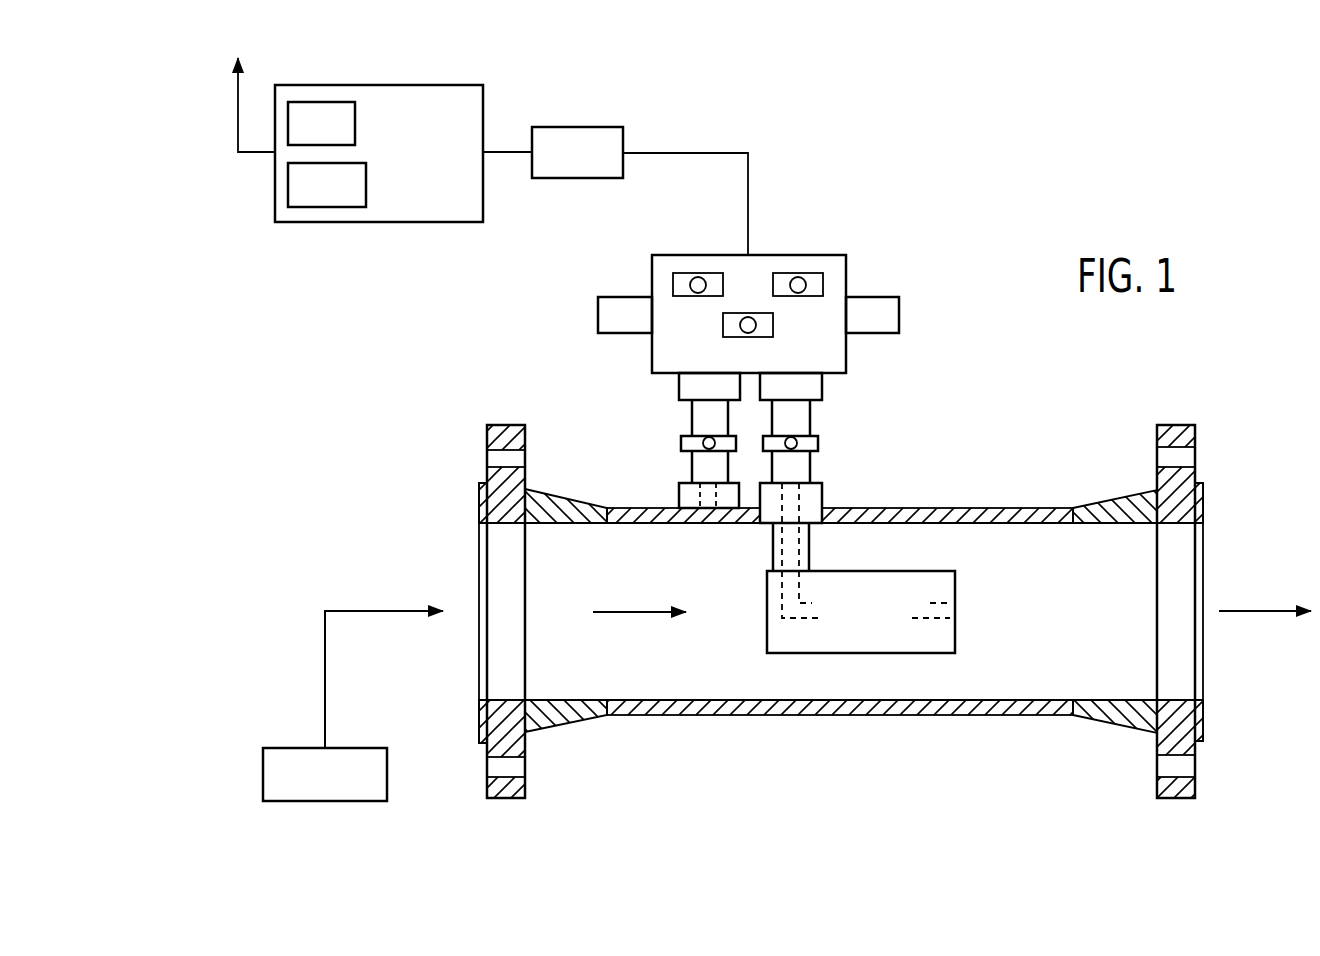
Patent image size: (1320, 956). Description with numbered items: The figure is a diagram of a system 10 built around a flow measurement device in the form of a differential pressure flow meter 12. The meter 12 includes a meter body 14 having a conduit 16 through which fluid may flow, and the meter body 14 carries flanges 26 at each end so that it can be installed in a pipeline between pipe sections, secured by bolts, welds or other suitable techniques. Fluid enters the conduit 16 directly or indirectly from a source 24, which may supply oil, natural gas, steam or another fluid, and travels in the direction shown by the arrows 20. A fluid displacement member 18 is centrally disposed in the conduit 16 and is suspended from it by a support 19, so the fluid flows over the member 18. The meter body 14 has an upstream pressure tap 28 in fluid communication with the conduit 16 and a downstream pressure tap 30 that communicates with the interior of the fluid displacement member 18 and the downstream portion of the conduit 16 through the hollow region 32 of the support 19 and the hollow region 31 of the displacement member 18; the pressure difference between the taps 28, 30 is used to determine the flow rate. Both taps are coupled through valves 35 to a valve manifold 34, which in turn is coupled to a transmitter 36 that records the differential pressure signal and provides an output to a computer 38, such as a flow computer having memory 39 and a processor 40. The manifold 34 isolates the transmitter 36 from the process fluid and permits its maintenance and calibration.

The system 10 is at (979, 252).
The differential pressure flow meter 12 is at (869, 583).
The meter body 14 is at (870, 715).
The conduit 16 is at (1124, 642).
The fluid displacement member 18 is at (913, 653).
The support 19 is at (809, 543).
The arrows 20 is at (393, 611).
The source 24 is at (262, 774).
The flanges 26 is at (510, 425).
The upstream pressure tap 28 is at (679, 497).
The downstream pressure tap 30 is at (822, 496).
The hollow region of the fluid displacement member 31 is at (773, 540).
The hollow region of the support 32 is at (810, 618).
The valve manifold 34 is at (846, 264).
The valves 35 is at (681, 442).
The transmitter 36 is at (610, 126).
The computer 38 is at (392, 168).
The memory 39 is at (325, 102).
The processor 40 is at (348, 207).